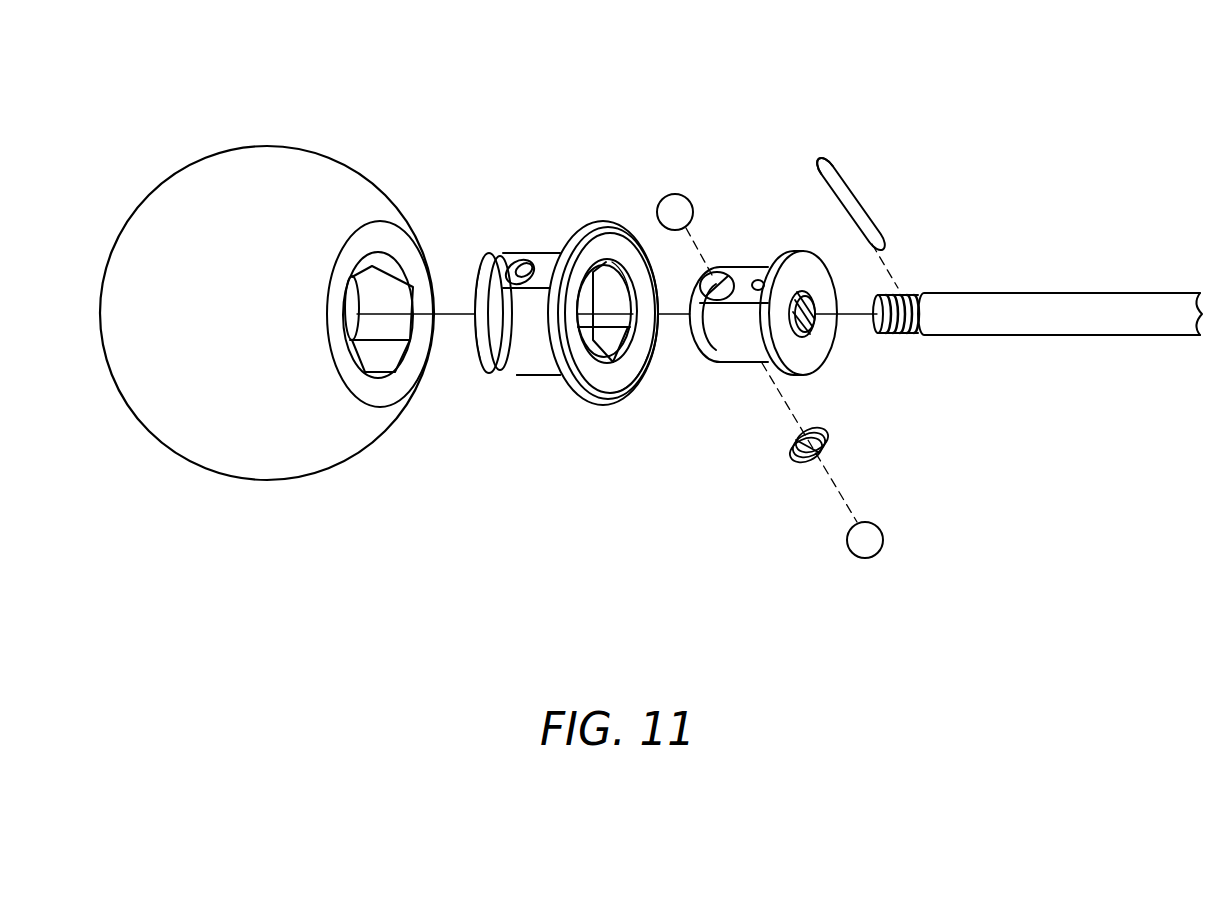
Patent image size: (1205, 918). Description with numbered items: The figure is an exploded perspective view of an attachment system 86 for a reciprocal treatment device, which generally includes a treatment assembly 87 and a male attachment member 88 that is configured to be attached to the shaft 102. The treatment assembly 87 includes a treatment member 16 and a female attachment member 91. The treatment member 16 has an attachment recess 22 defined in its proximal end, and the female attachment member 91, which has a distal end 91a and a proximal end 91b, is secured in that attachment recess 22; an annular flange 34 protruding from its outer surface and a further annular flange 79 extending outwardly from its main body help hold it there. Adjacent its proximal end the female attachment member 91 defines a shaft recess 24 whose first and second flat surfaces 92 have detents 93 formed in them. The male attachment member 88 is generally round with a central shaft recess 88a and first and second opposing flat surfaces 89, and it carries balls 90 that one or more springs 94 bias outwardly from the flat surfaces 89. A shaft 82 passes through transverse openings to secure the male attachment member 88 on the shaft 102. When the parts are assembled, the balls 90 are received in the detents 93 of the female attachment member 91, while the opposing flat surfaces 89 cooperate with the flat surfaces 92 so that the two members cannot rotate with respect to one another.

The treatment member 16 is at (268, 455).
The attachment recess 22 is at (395, 327).
The shaft recess 24 is at (625, 283).
The annular flange 34 is at (517, 374).
The annular flange 79 is at (607, 396).
The shaft 82 is at (860, 200).
The attachment system 86 is at (1052, 490).
The treatment assembly 87 is at (348, 120).
The male attachment member 88 is at (737, 352).
The shaft recess 88a is at (807, 293).
The flat surfaces 89 is at (748, 278).
The balls 90 is at (680, 194).
The female attachment member 91 is at (534, 355).
The distal end 91a is at (481, 265).
The proximal end 91b is at (637, 376).
The flat surfaces 92 is at (612, 262).
The detents 93 is at (524, 258).
The springs 94 is at (827, 440).
The shaft 102 is at (1068, 328).